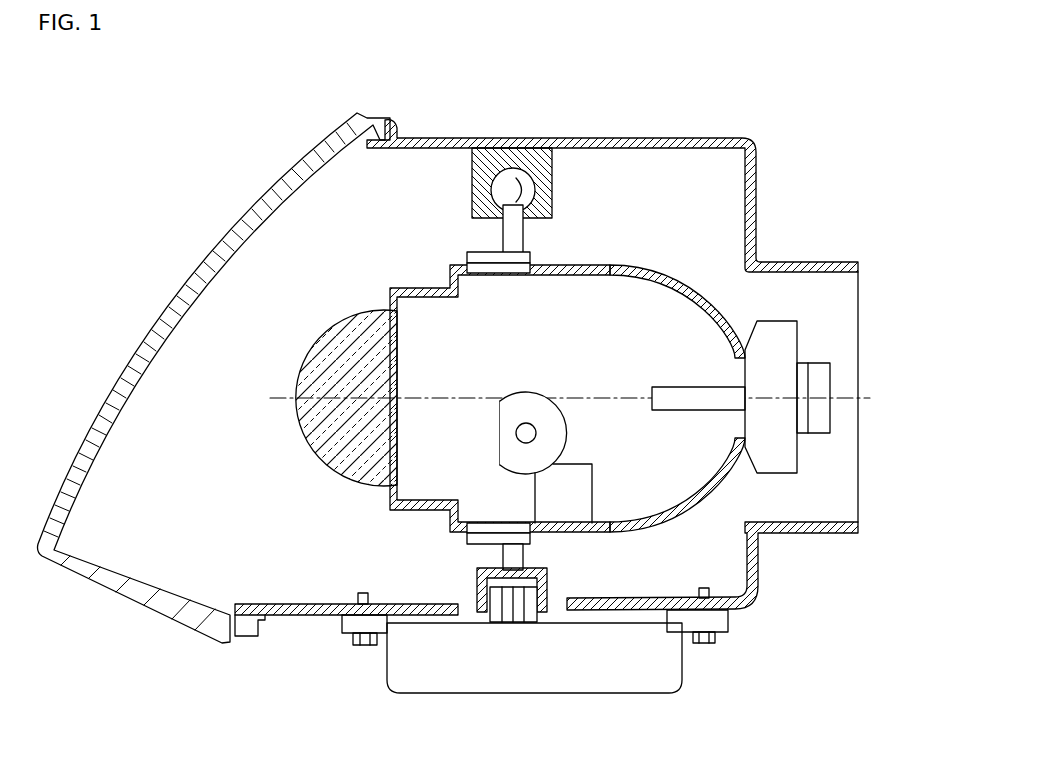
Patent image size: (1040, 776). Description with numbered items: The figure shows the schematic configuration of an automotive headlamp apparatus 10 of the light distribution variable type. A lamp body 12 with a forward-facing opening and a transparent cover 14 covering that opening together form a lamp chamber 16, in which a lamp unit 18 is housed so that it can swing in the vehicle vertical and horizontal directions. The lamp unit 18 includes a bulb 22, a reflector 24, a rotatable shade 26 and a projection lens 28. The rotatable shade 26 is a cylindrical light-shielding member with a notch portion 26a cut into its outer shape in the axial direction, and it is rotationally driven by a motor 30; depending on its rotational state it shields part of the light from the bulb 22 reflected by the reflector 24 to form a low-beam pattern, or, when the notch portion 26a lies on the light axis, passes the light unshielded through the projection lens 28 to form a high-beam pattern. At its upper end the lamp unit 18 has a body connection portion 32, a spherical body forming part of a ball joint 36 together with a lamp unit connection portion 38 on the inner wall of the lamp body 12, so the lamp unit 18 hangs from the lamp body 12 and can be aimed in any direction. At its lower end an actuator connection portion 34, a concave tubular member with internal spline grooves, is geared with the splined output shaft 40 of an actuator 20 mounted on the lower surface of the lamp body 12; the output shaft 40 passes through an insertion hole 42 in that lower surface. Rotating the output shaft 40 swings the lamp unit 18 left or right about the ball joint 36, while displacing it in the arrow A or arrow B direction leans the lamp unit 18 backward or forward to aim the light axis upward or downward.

The automotive headlamp apparatus 10 is at (585, 122).
The lamp body 12 is at (432, 140).
The transparent cover 14 is at (303, 150).
The lamp chamber 16 is at (322, 255).
The lamp unit 18 is at (425, 288).
The actuator 20 is at (604, 678).
The bulb 22 is at (700, 392).
The reflector 24 is at (655, 283).
The rotatable shade 26 is at (508, 450).
The notch portion 26a is at (500, 410).
The projection lens 28 is at (340, 435).
The motor 30 is at (583, 495).
The body connection portion 32 is at (537, 177).
The actuator connection portion 34 is at (548, 596).
The ball joint 36 is at (606, 163).
The lamp unit connection portion 38 is at (547, 205).
The output shaft 40 is at (513, 612).
The insertion hole 42 is at (463, 612).